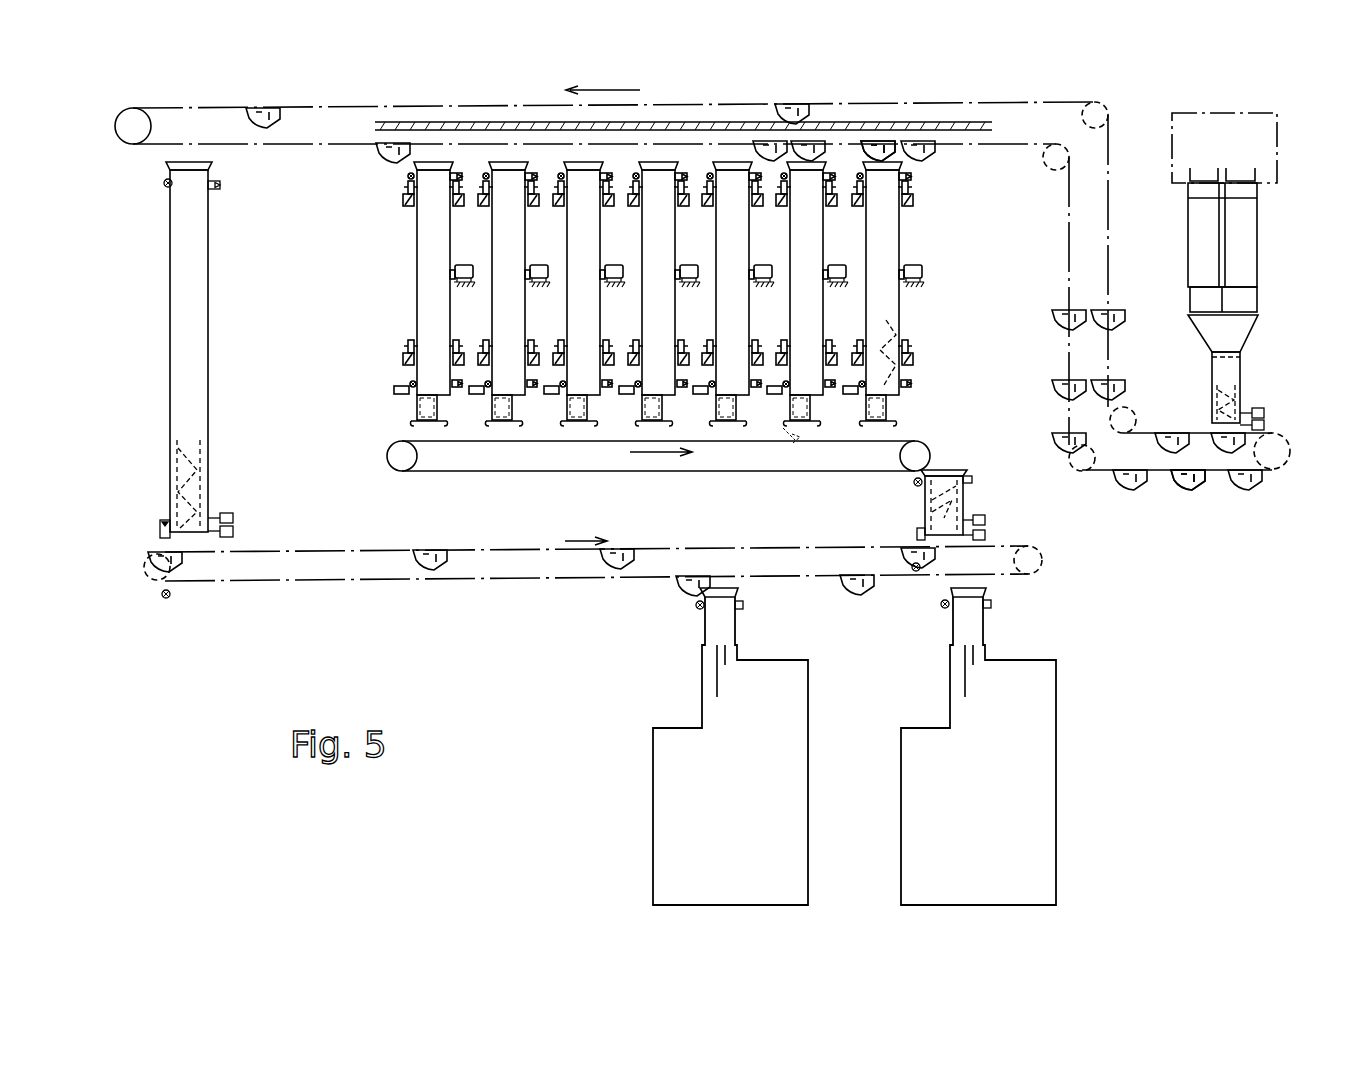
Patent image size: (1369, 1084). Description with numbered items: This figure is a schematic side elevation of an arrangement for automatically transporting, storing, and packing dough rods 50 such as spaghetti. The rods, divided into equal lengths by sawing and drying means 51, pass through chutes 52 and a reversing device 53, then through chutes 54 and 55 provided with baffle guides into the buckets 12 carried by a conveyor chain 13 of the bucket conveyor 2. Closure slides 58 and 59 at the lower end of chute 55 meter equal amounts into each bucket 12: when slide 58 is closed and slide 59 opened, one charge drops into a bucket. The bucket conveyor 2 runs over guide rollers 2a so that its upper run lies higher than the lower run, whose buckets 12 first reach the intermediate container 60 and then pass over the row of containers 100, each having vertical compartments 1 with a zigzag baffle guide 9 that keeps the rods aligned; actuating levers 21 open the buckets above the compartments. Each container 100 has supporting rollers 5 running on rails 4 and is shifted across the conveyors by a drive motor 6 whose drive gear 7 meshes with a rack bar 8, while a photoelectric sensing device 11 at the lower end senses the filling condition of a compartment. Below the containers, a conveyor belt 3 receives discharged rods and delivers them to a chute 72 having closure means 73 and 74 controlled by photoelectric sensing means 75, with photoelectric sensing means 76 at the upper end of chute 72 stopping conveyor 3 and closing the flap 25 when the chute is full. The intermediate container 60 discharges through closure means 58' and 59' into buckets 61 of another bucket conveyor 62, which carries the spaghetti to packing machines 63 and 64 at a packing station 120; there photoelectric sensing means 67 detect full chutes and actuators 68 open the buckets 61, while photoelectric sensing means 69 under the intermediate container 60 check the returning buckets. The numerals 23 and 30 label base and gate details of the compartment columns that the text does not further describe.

The compartment 1 is at (595, 246).
The bucket conveyor 2 is at (1298, 488).
The guide rollers 2a is at (1100, 104).
The conveyor belt 3 is at (640, 466).
The rails 4 is at (683, 208).
The supporting rollers 5 is at (548, 190).
The drive motor 6 is at (470, 270).
The drive gear 7 is at (214, 186).
The rack bar 8 is at (455, 288).
The zigzag baffle guide 9 is at (893, 330).
The photoelectric sensing device 11 is at (440, 386).
The buckets 12 is at (392, 152).
The conveyor chain 13 is at (1212, 486).
The actuating levers 21 is at (870, 152).
The column base 23 is at (714, 410).
The flap 25 is at (513, 424).
The outlet gate 30 is at (640, 368).
The dough rods 50 is at (1232, 176).
The sawing and drying means 51 is at (1270, 136).
The chutes 52 is at (1240, 242).
The reversing device 53 is at (1242, 306).
The chute 54 is at (1236, 342).
The chute 55 is at (1226, 382).
The closure slide 58 is at (1278, 403).
The closure slide 59 is at (1278, 424).
The closure means 58' is at (239, 500).
The closure means 59' is at (247, 528).
The intermediate container 60 is at (178, 283).
The buckets 61 is at (436, 550).
The bucket conveyor 62 is at (330, 582).
The packing machine 63 is at (1040, 832).
The packing machine 64 is at (784, 834).
The photoelectric sensing means 67 is at (735, 605).
The actuators 68 is at (706, 592).
The photoelectric sensing means 69 is at (164, 594).
The chute 72 is at (965, 498).
The closure means 73 is at (985, 521).
The closure means 74 is at (985, 536).
The photoelectric sensing means 75 is at (917, 534).
The photoelectric sensing means 76 is at (966, 477).
The container 100 is at (900, 222).
The packing station 120 is at (634, 812).